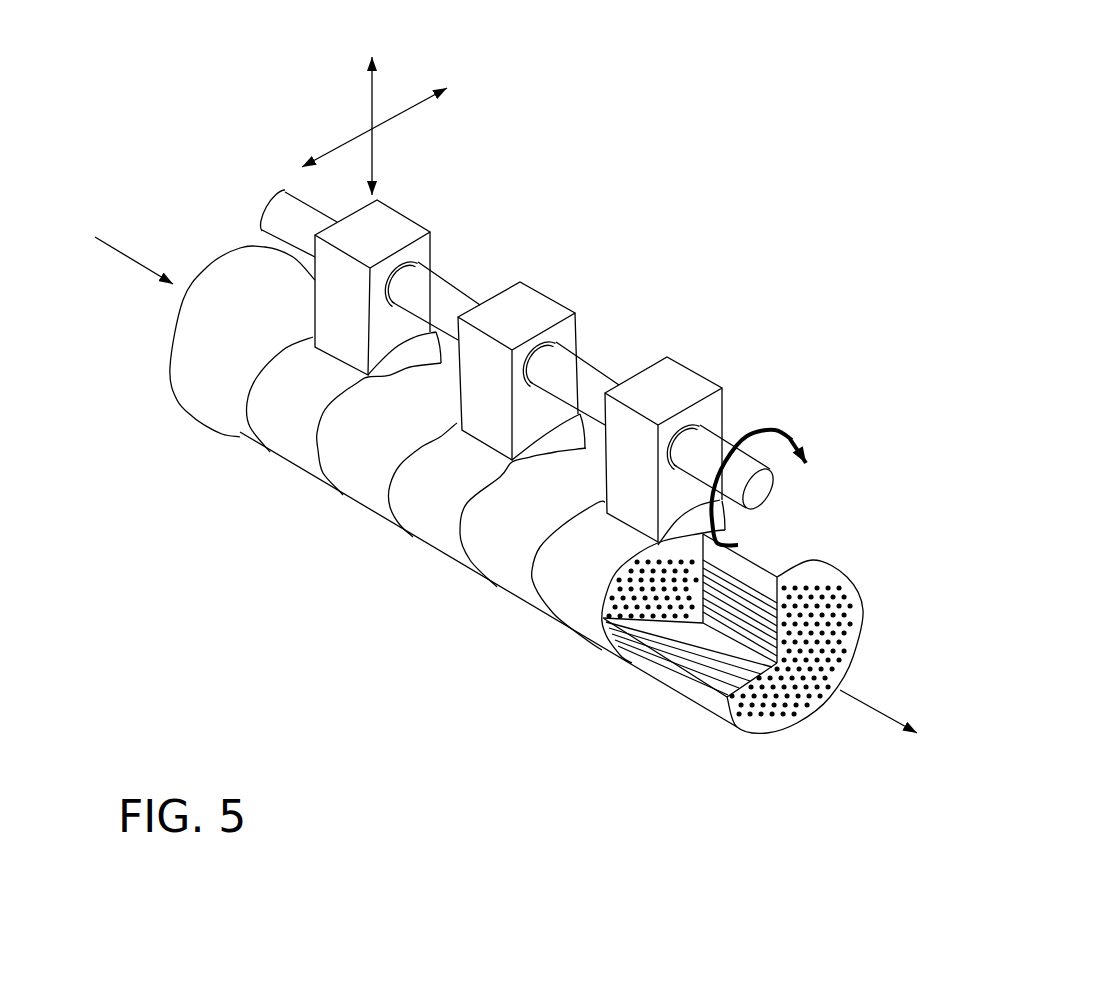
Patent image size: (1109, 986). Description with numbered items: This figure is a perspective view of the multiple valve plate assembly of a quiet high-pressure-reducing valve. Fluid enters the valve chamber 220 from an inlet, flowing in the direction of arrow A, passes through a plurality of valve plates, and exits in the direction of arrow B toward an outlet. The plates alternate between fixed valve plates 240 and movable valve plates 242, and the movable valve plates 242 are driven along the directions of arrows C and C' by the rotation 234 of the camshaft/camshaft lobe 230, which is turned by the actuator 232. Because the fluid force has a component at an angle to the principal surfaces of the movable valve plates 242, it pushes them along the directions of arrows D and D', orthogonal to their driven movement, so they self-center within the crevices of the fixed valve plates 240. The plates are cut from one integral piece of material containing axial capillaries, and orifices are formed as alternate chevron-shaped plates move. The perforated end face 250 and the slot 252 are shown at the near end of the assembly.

The valve chamber 220 is at (552, 175).
The camshaft/camshaft lobe 230 is at (762, 491).
The actuator 232 is at (257, 195).
The rotation 234 is at (795, 488).
The fixed valve plates 240 is at (630, 675).
The movable valve plates 242 is at (708, 360).
The perforated end face 250 is at (770, 713).
The slot channel 252 is at (655, 610).